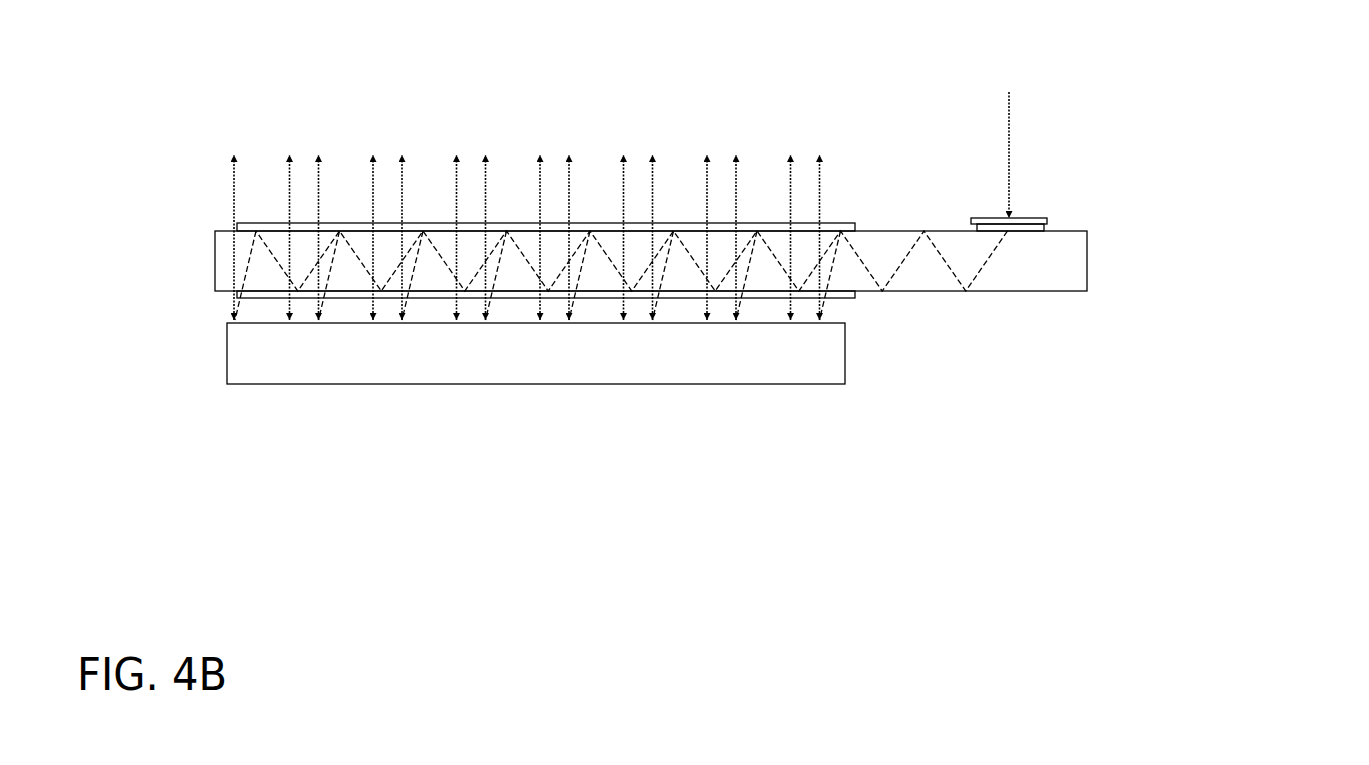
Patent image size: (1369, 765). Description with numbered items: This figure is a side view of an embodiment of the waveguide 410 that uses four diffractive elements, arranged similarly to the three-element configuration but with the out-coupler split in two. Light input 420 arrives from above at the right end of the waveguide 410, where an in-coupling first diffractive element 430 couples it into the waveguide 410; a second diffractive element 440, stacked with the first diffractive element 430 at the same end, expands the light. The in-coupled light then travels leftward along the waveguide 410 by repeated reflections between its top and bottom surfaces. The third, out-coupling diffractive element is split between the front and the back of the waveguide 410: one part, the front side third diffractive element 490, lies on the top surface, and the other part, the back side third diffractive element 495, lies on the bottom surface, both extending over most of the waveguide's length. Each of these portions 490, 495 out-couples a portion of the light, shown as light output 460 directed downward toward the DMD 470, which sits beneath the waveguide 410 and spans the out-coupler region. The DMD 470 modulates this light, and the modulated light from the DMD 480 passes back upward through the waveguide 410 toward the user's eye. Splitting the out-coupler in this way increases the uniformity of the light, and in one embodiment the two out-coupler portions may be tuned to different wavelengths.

The waveguide 410 is at (181, 230).
The light input 420 is at (1023, 115).
The first diffractive element 430 is at (1044, 223).
The second diffractive element 440 is at (1034, 213).
The light output toward DMD 460 is at (833, 308).
The DMD 470 is at (849, 382).
The modulated light from the DMD 480 is at (743, 142).
The front side third diffractive element 490 is at (862, 213).
The back side third diffractive element 495 is at (867, 297).